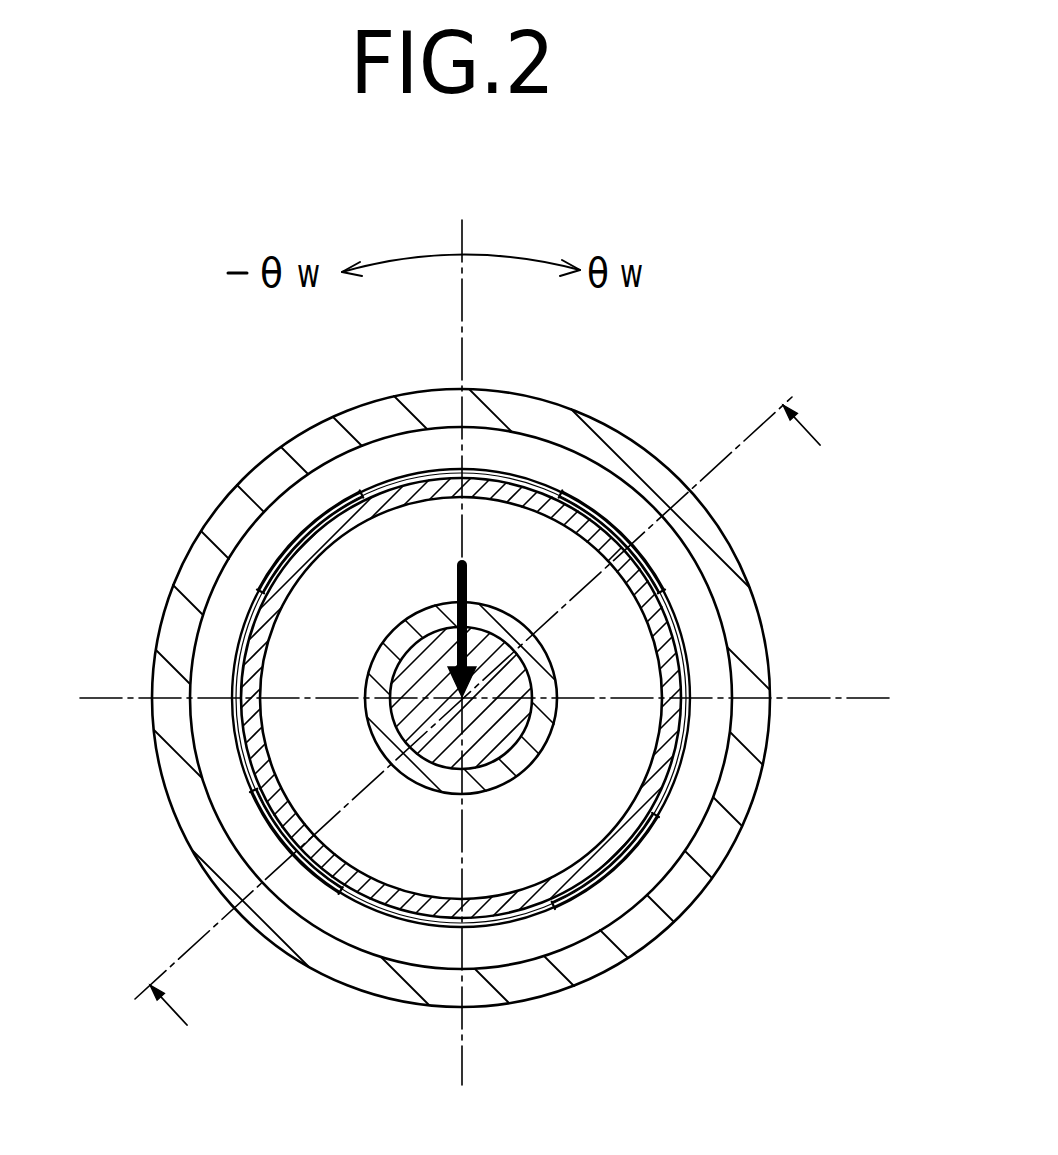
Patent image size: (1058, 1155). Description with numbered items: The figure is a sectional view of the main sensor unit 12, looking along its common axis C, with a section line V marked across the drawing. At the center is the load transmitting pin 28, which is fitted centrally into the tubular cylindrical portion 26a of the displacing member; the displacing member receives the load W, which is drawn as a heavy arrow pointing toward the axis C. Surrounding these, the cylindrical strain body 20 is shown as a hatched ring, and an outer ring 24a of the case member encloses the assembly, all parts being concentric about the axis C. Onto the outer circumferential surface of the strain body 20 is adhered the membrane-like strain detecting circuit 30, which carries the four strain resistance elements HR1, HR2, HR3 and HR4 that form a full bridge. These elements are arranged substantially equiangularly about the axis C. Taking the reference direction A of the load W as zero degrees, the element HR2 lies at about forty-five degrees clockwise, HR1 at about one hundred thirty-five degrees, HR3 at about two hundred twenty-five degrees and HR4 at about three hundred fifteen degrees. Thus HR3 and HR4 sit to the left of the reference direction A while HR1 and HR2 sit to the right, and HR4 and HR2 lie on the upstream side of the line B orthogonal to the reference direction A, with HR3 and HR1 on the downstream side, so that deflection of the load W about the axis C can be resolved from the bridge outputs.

The main sensor unit 12 is at (682, 280).
The cylindrical strain body 20 is at (257, 622).
The outer housing ring 24a is at (215, 512).
The tubular cylindrical portion 26a is at (380, 757).
The load transmitting pin 28 is at (408, 716).
The strain detecting circuit 30 is at (683, 625).
The strain resistance element HR1 is at (645, 848).
The strain resistance element HR2 is at (655, 553).
The strain resistance element HR3 is at (318, 892).
The strain resistance element HR4 is at (327, 497).
The reference direction A is at (462, 240).
The line orthogonal to the reference direction B is at (860, 698).
The axis C is at (538, 748).
The load W is at (438, 613).
The section line V- V is at (466, 685).